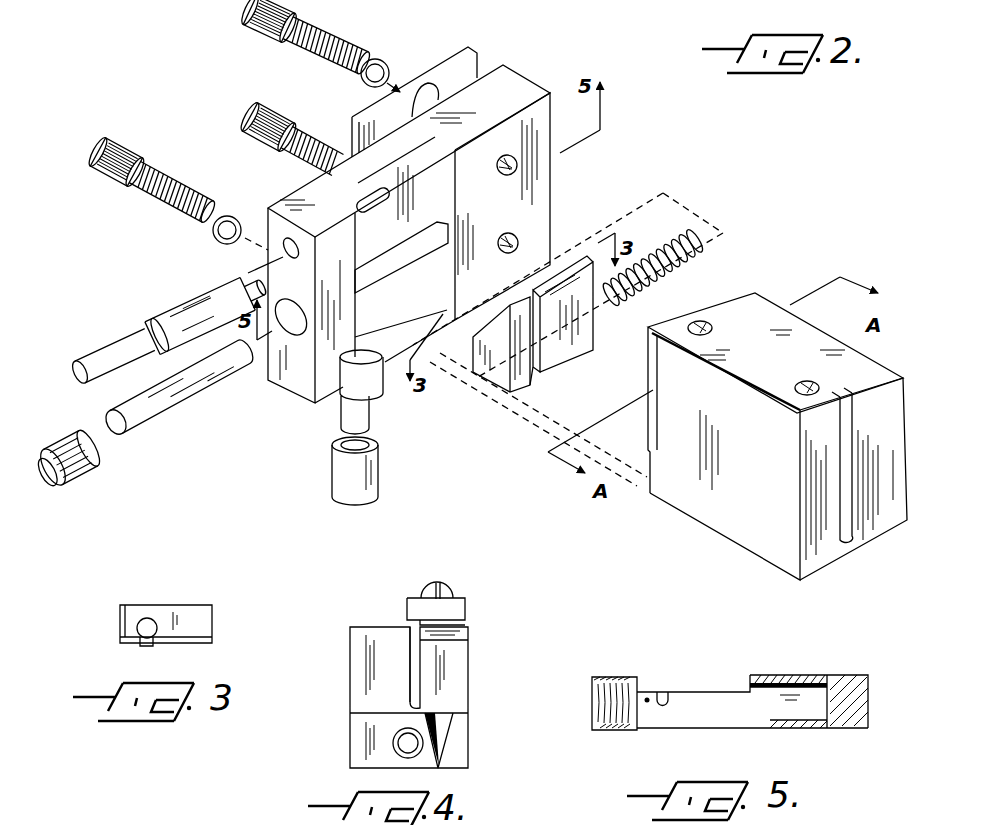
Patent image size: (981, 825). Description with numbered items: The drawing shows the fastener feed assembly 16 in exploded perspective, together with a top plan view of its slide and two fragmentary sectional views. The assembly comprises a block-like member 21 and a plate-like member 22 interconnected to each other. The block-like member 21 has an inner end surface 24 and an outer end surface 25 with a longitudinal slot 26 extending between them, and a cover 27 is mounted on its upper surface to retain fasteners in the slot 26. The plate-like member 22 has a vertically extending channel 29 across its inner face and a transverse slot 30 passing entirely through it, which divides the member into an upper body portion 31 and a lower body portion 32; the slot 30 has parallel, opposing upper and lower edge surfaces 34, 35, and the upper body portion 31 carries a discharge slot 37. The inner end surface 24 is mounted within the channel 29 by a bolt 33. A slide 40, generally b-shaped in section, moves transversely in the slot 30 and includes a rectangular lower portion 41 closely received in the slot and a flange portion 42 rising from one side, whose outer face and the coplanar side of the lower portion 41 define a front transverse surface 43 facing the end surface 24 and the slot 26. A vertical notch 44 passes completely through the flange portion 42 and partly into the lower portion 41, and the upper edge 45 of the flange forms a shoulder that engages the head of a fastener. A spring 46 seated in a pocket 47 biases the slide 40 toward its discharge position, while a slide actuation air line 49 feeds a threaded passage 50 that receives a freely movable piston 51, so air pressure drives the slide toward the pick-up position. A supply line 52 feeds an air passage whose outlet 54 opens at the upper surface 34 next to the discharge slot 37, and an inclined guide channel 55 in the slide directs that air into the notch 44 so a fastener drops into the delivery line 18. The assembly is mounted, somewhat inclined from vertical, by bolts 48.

In FIG. 2, the fastener feed assembly 16 is at (784, 429).
In FIG. 2, the fastener delivery line 18 is at (378, 468).
In FIG. 2, the block-like member 21 is at (734, 519).
In FIG. 4, the block-like member 21 is at (472, 680).
In FIG. 2, the plate-like member 22 is at (523, 65).
In FIG. 5, the plate-like member 22 is at (843, 671).
In FIG. 4, the inner end surface 24 is at (388, 690).
In FIG. 2, the outer end surface 25 is at (893, 508).
In FIG. 2, the longitudinal slot 26 is at (846, 549).
In FIG. 4, the longitudinal slot 26 is at (408, 643).
In FIG. 2, the cover 27 is at (712, 322).
In FIG. 4, the cover 27 is at (466, 604).
In FIG. 2, the vertically extending channel 29 is at (452, 192).
In FIG. 2, the transverse slot 30 is at (418, 230).
In FIG. 2, the upper body portion 31 is at (385, 240).
In FIG. 2, the lower body portion 32 is at (430, 299).
In FIG. 2, the bolt 33 is at (131, 151).
In FIG. 5, the upper edge surface 34 is at (740, 717).
In FIG. 2, the lower edge surface 35 is at (390, 287).
In FIG. 5, the discharge slot 37 is at (664, 694).
In FIG. 2, the slide 40 is at (533, 316).
In FIG. 3, the slide 40 is at (189, 603).
In FIG. 2, the lower portion 41 is at (505, 370).
In FIG. 2, the flange portion 42 is at (483, 348).
In FIG. 2, the front transverse surface 43 is at (590, 297).
In FIG. 2, the vertical notch 44 is at (540, 340).
In FIG. 3, the vertical notch 44 is at (150, 641).
In FIG. 2, the upper edge 45 is at (590, 258).
In FIG. 2, the spring 46 is at (704, 260).
In FIG. 2, the pocket 47 is at (449, 63).
In FIG. 5, the pocket 47 is at (788, 703).
In FIG. 2, the bolts 48 is at (250, 112).
In FIG. 2, the slide actuation air line 49 is at (63, 473).
In FIG. 2, the threaded passage 50 is at (303, 392).
In FIG. 5, the threaded passage 50 is at (590, 694).
In FIG. 2, the piston 51 is at (181, 394).
In FIG. 2, the supply line 52 is at (126, 343).
In FIG. 5, the outlet 54 is at (646, 697).
In FIG. 3, the inclined guide channel 55 is at (138, 622).